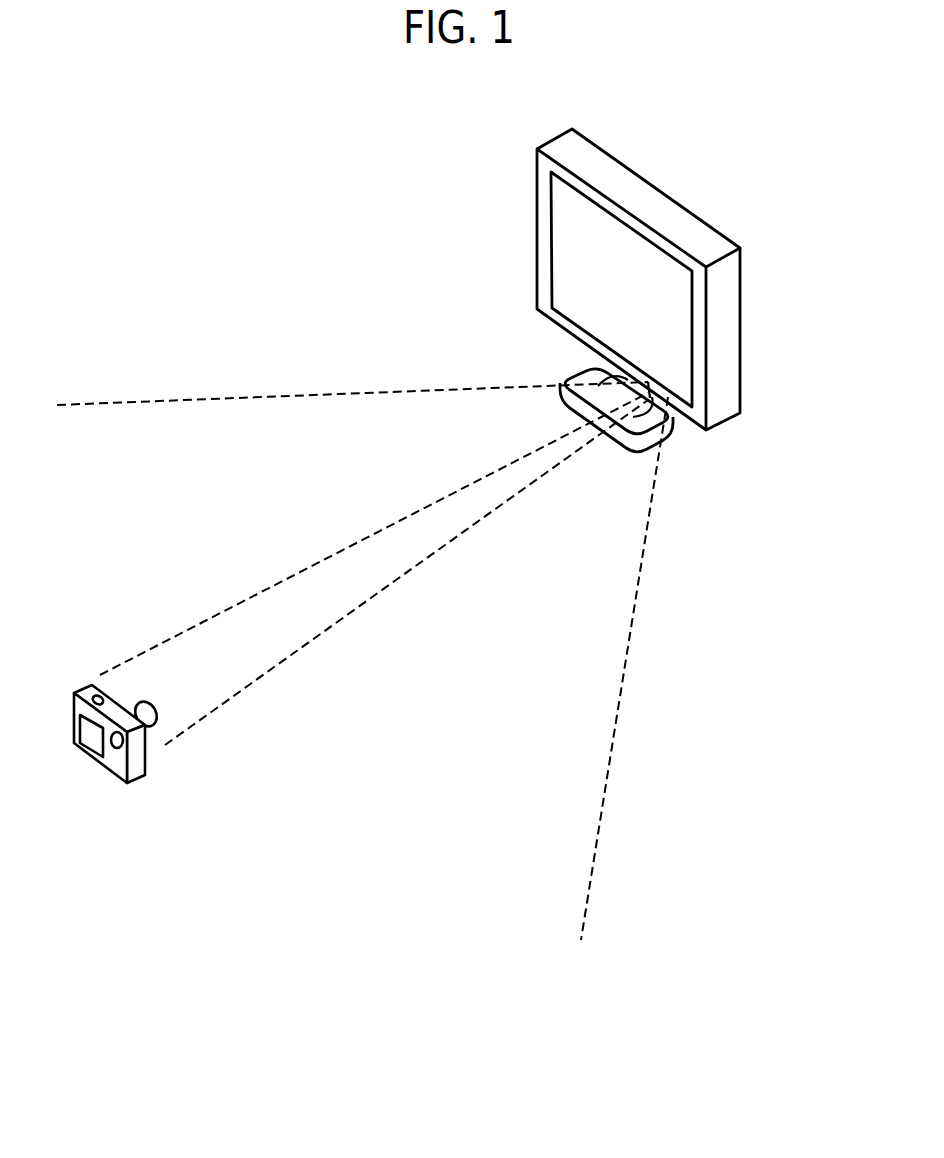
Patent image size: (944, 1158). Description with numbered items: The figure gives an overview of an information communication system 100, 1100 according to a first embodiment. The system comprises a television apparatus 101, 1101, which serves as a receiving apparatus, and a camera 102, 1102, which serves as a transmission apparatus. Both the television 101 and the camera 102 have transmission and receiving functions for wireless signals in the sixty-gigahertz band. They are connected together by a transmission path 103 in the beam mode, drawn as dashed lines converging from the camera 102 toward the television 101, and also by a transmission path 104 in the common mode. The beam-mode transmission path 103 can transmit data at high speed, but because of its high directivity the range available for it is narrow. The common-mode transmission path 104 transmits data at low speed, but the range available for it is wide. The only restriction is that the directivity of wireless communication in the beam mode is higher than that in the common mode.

The information communication system 100 is at (605, 281).
The display apparatus 1100 is at (605, 281).
The television apparatus 101 is at (516, 289).
The display screen 1101 is at (534, 207).
The camera 102 is at (203, 759).
The camera 1102 is at (166, 776).
The transmission path in the beam mode 103 is at (463, 538).
The transmission path in the common mode 104 is at (622, 760).